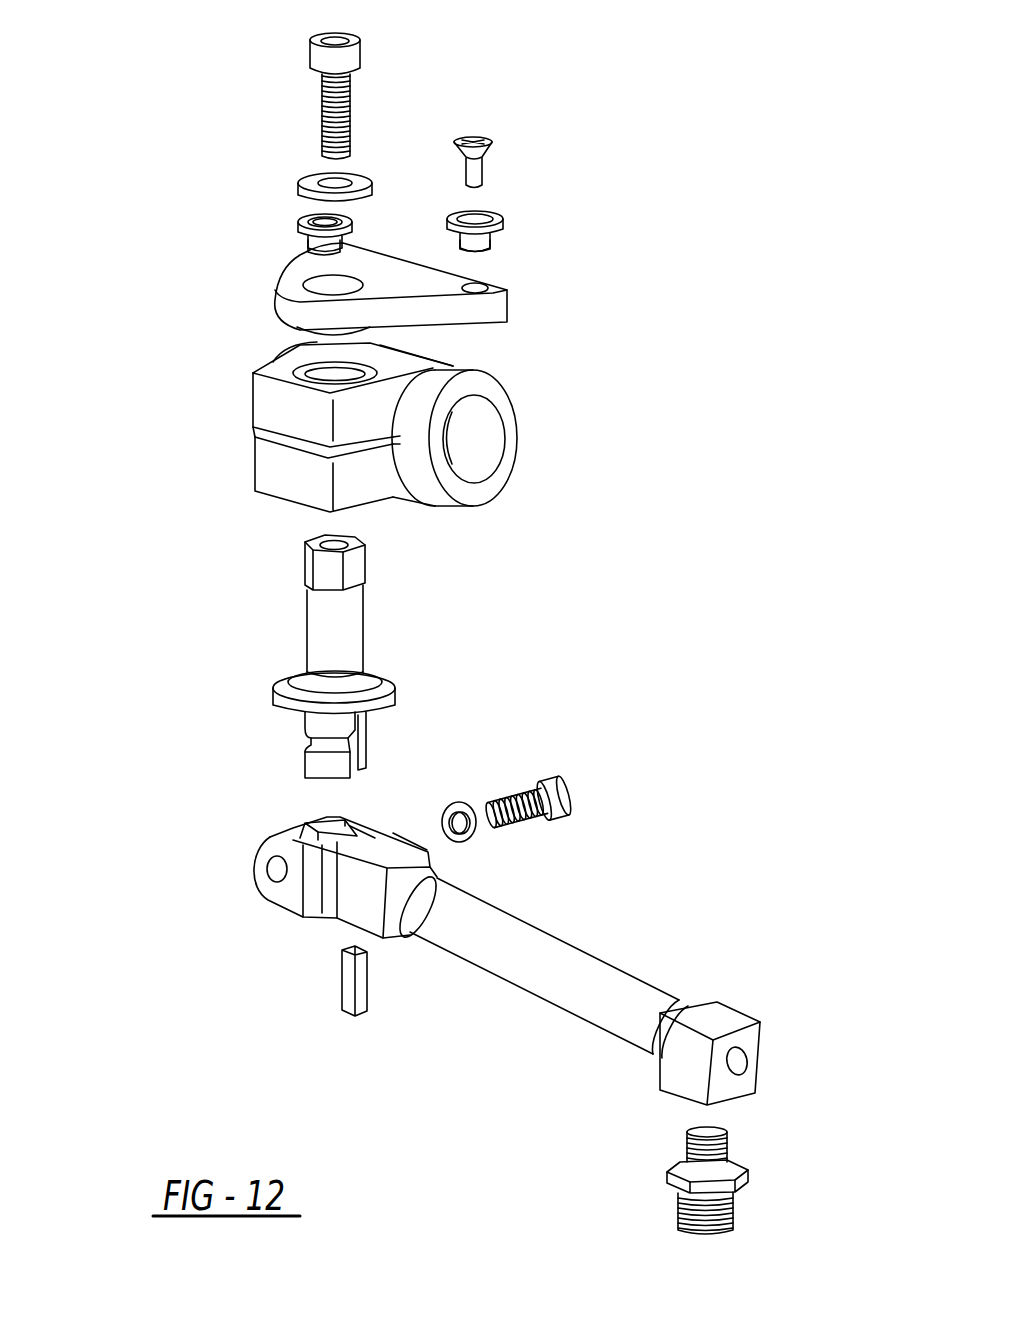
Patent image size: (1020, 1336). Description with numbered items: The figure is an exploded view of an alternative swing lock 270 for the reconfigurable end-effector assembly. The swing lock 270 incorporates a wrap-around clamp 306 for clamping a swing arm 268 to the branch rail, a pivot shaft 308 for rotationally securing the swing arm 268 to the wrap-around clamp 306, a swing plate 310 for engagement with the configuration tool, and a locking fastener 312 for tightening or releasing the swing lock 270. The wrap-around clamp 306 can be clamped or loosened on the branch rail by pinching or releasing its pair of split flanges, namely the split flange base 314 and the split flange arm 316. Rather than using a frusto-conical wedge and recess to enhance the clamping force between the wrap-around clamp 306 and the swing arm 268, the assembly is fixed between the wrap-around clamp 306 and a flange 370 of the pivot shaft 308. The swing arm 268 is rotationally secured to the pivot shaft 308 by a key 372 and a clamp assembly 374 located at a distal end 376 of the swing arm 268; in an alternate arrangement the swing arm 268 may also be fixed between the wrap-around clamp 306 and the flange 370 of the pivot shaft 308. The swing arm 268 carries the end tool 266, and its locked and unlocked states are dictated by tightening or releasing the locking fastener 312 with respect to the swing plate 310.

The swing lock 270 is at (183, 181).
The locking fastener 312 is at (357, 120).
The swing plate 310 is at (292, 318).
The split flange arm 316 is at (355, 412).
The wrap-around clamp 306 is at (275, 471).
The split flange base 314 is at (368, 490).
The pivot shaft 308 is at (305, 608).
The flange 370 is at (385, 688).
The clamp assembly 374 is at (432, 795).
The distal end 376 is at (265, 892).
The key 372 is at (340, 978).
The swing arm 268 is at (540, 965).
The end tool 266 is at (673, 1213).